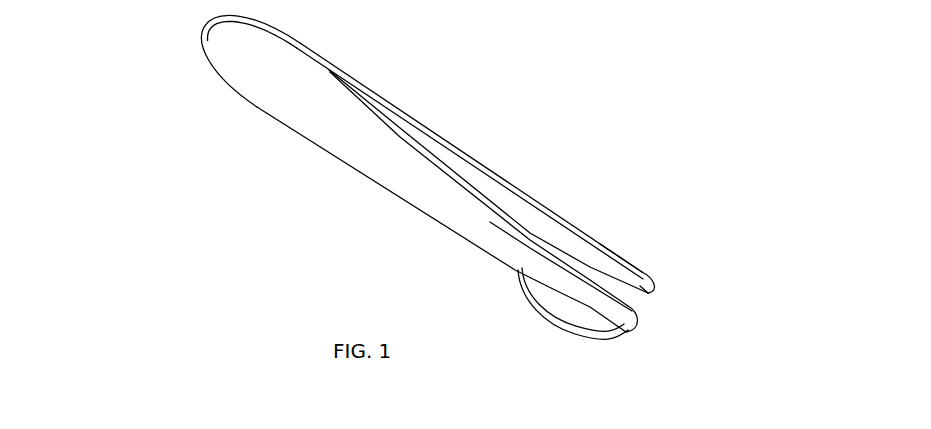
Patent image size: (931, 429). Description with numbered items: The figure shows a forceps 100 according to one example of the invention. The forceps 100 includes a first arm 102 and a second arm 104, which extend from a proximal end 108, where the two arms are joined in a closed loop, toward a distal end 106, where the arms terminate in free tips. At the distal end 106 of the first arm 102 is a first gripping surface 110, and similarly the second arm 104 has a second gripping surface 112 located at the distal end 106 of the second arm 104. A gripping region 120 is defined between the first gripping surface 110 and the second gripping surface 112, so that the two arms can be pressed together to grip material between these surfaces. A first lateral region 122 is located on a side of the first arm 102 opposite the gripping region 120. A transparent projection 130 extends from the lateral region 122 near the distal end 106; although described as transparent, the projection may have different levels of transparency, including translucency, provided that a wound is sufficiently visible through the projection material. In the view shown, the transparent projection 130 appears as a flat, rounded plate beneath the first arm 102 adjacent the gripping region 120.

The forceps 100 is at (226, 288).
The first arm 102 is at (448, 190).
The second arm 104 is at (490, 167).
The distal end 106 is at (683, 262).
The proximal end 108 is at (169, 73).
The first gripping surface 110 is at (617, 303).
The second gripping surface 112 is at (637, 287).
The gripping region 120 is at (640, 309).
The first lateral region 122 is at (583, 292).
The transparent projection 130 is at (592, 324).